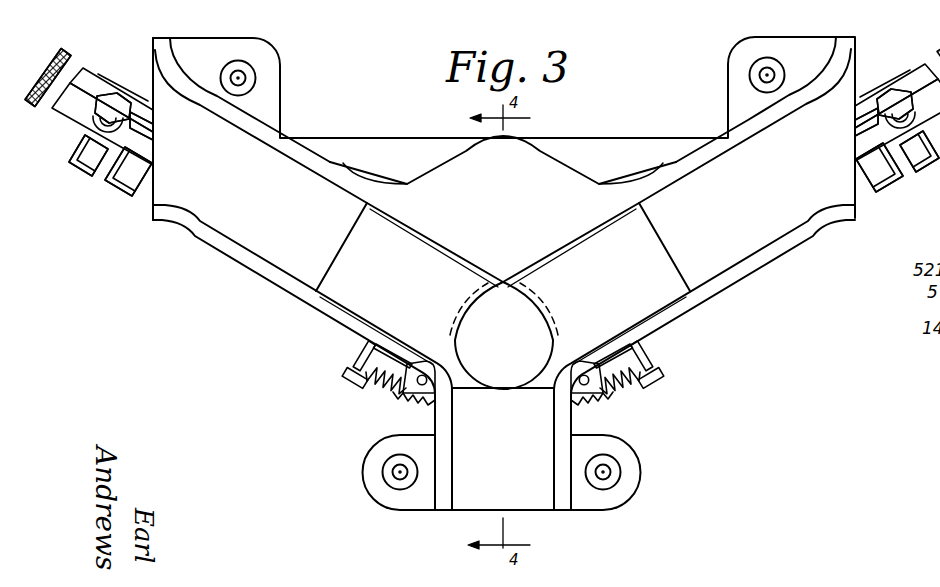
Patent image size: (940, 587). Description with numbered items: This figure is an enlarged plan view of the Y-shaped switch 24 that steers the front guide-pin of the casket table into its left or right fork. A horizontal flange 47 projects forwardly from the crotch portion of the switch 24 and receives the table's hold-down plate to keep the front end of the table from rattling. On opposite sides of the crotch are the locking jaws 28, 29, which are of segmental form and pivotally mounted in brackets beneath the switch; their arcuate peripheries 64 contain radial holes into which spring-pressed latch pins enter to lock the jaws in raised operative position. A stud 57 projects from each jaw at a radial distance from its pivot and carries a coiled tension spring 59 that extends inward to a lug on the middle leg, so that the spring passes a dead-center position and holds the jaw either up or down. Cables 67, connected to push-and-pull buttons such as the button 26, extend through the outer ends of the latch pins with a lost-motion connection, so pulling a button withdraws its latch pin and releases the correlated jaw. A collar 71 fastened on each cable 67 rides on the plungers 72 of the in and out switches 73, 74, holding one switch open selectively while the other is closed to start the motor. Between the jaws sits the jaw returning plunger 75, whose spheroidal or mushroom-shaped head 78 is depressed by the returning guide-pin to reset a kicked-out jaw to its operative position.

The Y-shaped switch 24 is at (295, 298).
The push-and-pull button 26 is at (42, 74).
The locking jaw 28 is at (340, 254).
The locking jaw 29 is at (655, 242).
The horizontal flange 47 is at (558, 170).
The stud 57 is at (351, 386).
The coiled tension spring 59 is at (394, 398).
The arcuate periphery 64 is at (413, 247).
The cable 67 is at (87, 80).
The collar 71 is at (148, 126).
The plunger 72 is at (140, 90).
The "in" switch 73 is at (75, 175).
The "out" switch 74 is at (126, 200).
The jaw returning plunger 75 is at (483, 375).
The spheroidal or mushroom-shaped head 78 is at (528, 370).